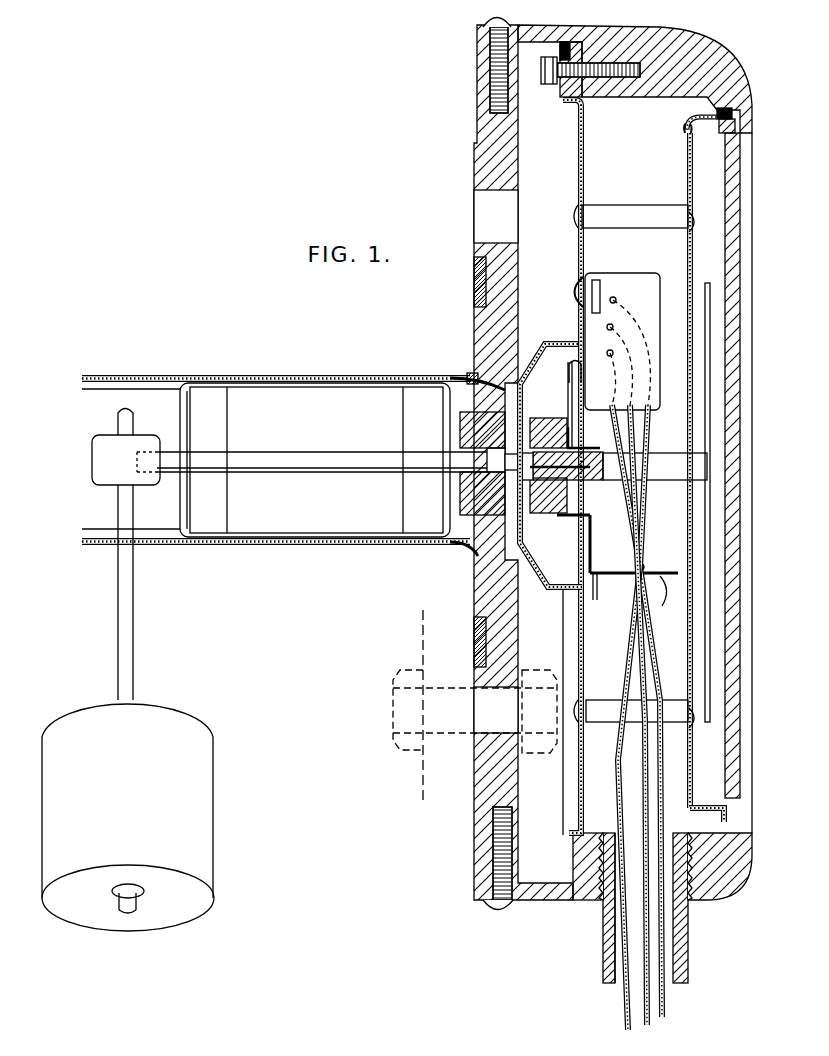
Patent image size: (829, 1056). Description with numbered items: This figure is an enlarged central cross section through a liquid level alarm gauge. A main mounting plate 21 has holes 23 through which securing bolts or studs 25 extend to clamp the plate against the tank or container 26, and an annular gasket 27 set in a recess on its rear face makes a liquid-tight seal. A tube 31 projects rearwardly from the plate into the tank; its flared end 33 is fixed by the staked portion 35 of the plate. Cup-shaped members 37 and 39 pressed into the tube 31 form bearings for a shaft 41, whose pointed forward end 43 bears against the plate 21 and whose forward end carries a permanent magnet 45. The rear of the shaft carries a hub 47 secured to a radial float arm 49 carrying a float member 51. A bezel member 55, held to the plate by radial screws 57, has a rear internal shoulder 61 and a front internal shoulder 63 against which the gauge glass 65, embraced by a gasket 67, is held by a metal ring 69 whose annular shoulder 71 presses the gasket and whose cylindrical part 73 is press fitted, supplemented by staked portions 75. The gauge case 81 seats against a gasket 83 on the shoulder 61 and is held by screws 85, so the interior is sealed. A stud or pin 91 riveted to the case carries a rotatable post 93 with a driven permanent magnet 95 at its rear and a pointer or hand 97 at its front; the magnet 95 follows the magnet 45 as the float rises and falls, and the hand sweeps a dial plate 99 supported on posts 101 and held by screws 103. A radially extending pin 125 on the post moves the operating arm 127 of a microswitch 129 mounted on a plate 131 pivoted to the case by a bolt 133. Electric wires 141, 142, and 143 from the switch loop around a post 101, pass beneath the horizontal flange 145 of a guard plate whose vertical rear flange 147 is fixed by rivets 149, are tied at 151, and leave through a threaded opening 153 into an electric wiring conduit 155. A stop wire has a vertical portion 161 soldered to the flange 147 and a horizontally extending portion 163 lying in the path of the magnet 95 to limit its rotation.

The main mounting plate 21 is at (478, 172).
The holes 23 is at (505, 206).
The securing bolts or studs 25 is at (447, 734).
The tank or container 26 is at (432, 628).
The annular gasket 27 is at (474, 282).
The tube 31 is at (325, 375).
The flared end 33 is at (470, 378).
The staked portion 35 is at (478, 373).
The cup-shaped member 37 is at (413, 418).
The cup-shaped member 39 is at (182, 420).
The shaft 41 is at (282, 473).
The pointed forward end 43 is at (490, 515).
The permanent magnet 45 is at (486, 412).
The hub 47 is at (92, 462).
The radial float arm 49 is at (134, 600).
The float member 51 is at (212, 768).
The bezel member 55 is at (648, 48).
The radial screws 57 is at (484, 17).
The internal shoulder 61 is at (575, 62).
The internal shoulder 63 is at (742, 117).
The gauge glass 65 is at (741, 212).
The gasket 67 is at (716, 132).
The metal ring 69 is at (684, 126).
The annular shoulder 71 is at (693, 116).
The cylindrical part 73 is at (728, 108).
The staked portions 75 is at (718, 110).
The gauge case 81 is at (582, 157).
The gasket 83 is at (568, 44).
The screws 85 is at (548, 86).
The stud or pin 91 is at (570, 480).
The post 93 is at (658, 453).
The permanent magnet 95 is at (554, 418).
The pointer or hand 97 is at (712, 562).
The dial plate 99 is at (687, 262).
The posts 101 is at (643, 212).
The screws 103 is at (691, 226).
The radially extending pin 125 is at (587, 446).
The operating arm 127 is at (566, 372).
The microswitch 129 is at (627, 281).
The plate 131 is at (595, 278).
The bolt 133 is at (574, 291).
The electric wire 141 is at (665, 1003).
The electric wire 142 is at (650, 1022).
The electric wire 143 is at (625, 1008).
The horizontal flange 145 is at (665, 580).
The vertical rear flange 147 is at (575, 547).
The rivets 149 is at (595, 577).
The tie 151 is at (645, 565).
The opening 153 is at (640, 898).
The electric wiring conduit 155 is at (690, 945).
The vertical portion 161 is at (593, 548).
The horizontally extending portion 163 is at (559, 517).